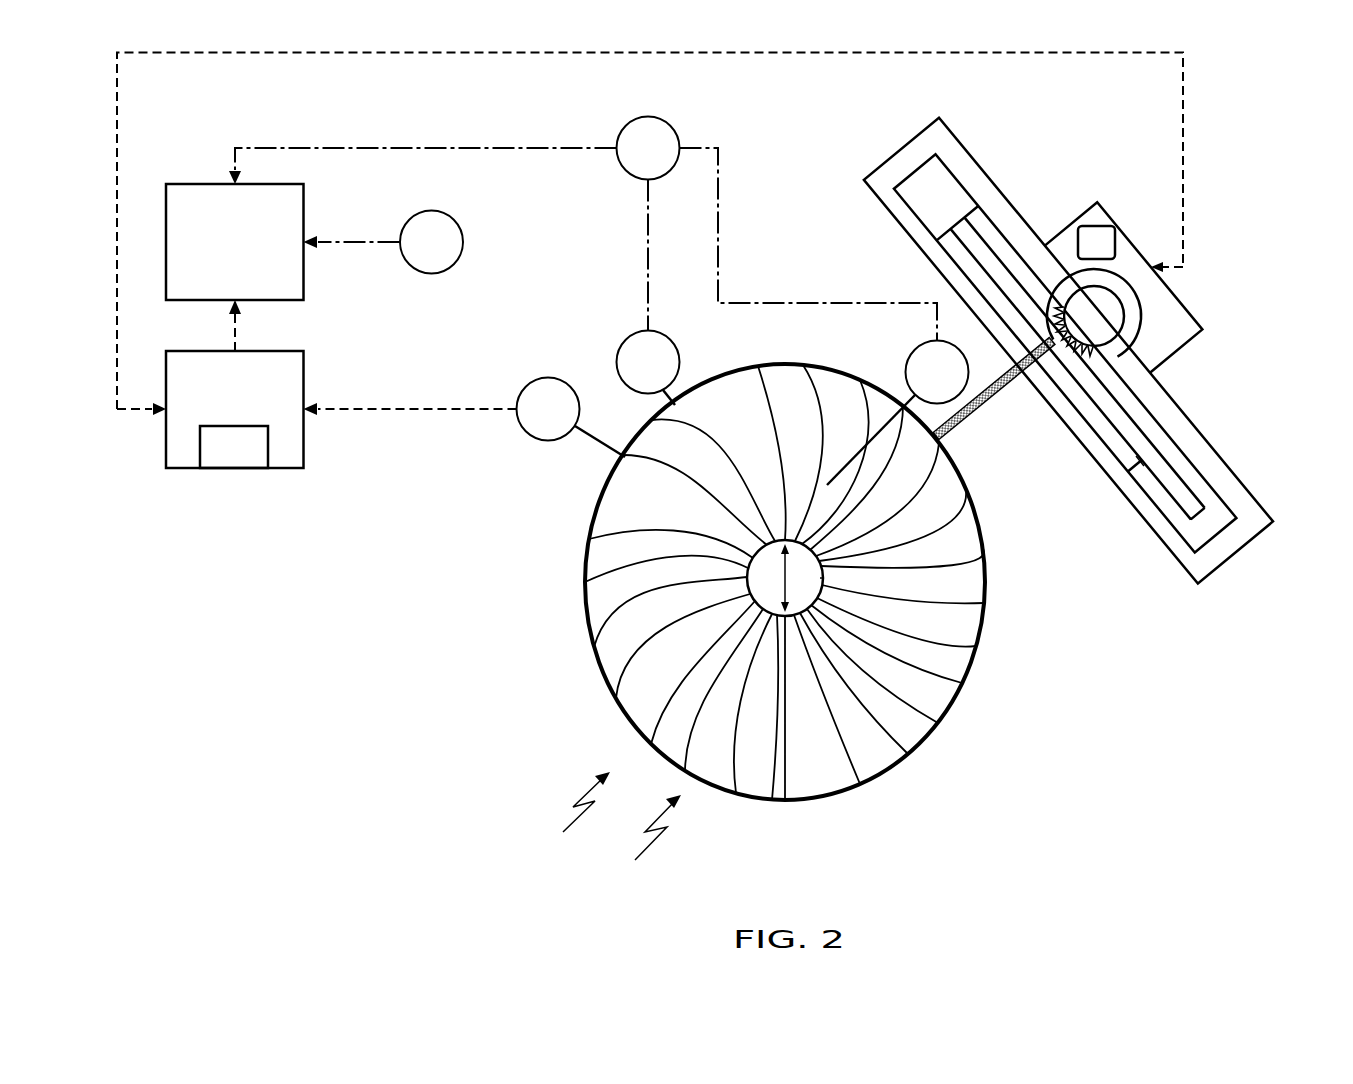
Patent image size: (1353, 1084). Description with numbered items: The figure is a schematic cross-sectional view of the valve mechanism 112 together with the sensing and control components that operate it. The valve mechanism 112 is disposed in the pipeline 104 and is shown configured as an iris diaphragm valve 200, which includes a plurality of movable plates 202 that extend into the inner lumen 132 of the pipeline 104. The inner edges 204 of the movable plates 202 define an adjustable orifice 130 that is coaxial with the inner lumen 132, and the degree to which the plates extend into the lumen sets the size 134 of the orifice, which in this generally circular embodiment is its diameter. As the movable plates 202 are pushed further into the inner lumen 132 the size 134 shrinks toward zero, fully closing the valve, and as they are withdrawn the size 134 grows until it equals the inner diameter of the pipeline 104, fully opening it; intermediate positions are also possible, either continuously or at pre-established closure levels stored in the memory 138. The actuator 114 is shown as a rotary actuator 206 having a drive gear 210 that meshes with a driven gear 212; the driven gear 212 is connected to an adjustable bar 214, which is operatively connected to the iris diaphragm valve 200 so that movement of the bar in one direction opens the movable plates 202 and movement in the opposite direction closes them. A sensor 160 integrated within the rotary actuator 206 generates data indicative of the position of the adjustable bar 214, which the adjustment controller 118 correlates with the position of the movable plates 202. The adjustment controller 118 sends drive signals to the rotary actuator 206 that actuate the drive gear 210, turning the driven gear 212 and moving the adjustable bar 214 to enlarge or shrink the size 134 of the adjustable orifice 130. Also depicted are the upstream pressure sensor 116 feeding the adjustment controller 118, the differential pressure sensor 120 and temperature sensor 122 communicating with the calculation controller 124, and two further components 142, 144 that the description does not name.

The pipeline 104 is at (748, 605).
The valve mechanism 112 is at (573, 815).
The actuator 114 is at (1189, 322).
The upstream pressure sensor 116 is at (571, 418).
The adjustment controller 118 is at (235, 409).
The differential pressure sensor 120 is at (648, 148).
The temperature sensor 122 is at (431, 242).
The calculation controller 124 is at (235, 242).
The adjustable orifice 130 is at (768, 549).
The inner lumen 132 is at (604, 508).
The size 134 is at (803, 589).
The memory 138 is at (234, 447).
The sensor 142 is at (648, 368).
The sensor 144 is at (898, 413).
The sensor 160 is at (1090, 240).
The iris diaphragm valve 200 is at (640, 841).
The movable plates 202 is at (765, 792).
The inner edges 204 is at (752, 598).
The rotary actuator 206 is at (1095, 328).
The drive gear 210 is at (1118, 316).
The driven gear 212 is at (1140, 462).
The adjustable bar 214 is at (993, 398).